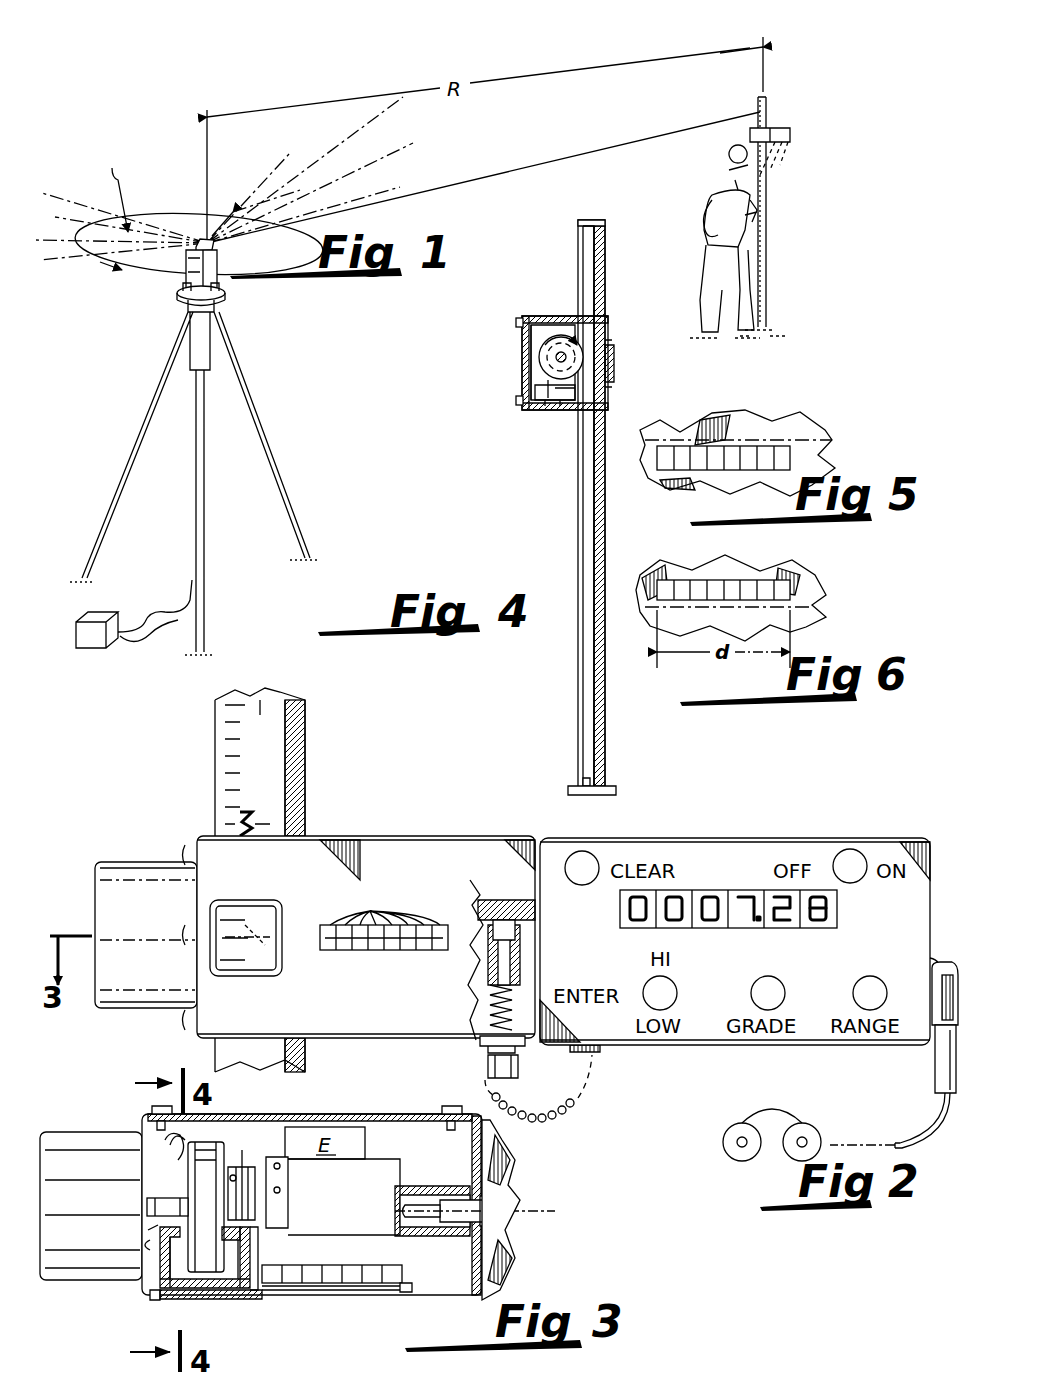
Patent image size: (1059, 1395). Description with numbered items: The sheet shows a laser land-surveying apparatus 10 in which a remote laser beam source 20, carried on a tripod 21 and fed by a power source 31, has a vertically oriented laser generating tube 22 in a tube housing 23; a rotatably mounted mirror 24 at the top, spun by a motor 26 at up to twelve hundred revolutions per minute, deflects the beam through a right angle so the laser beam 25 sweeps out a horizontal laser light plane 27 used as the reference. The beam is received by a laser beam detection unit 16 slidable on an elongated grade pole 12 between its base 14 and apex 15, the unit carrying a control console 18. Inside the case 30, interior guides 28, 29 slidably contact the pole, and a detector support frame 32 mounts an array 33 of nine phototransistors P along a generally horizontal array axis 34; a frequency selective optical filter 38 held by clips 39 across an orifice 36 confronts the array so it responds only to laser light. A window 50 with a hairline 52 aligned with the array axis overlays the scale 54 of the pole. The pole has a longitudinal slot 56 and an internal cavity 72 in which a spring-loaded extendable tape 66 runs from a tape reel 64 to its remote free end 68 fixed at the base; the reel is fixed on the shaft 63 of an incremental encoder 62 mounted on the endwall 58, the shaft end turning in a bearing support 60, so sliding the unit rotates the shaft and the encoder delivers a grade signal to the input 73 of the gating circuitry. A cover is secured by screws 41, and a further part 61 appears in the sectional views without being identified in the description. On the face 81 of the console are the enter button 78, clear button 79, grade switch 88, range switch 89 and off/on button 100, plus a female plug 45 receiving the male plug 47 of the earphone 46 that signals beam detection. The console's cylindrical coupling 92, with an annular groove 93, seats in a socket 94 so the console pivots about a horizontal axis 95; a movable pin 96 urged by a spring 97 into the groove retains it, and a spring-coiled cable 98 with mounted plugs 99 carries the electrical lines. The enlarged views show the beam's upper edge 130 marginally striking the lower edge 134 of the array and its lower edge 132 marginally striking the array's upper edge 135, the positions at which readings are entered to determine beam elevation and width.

In FIG. 1, the laser land-surveying apparatus 10 is at (818, 130).
In FIG. 1, the grade pole 12 is at (767, 226).
In FIG. 4, the grade pole 12 is at (552, 515).
In FIG. 2, the grade pole 12 is at (305, 718).
In FIG. 3, the grade pole 12 is at (250, 1255).
In FIG. 1, the base 14 is at (767, 325).
In FIG. 4, the base 14 is at (568, 790).
In FIG. 1, the apex 15 is at (766, 98).
In FIG. 4, the apex 15 is at (592, 220).
In FIG. 1, the laser beam detection unit 16 is at (778, 128).
In FIG. 2, the laser beam detection unit 16 is at (440, 836).
In FIG. 3, the laser beam detection unit 16 is at (327, 1310).
In FIG. 1, the control console 18 is at (790, 142).
In FIG. 2, the control console 18 is at (737, 813).
In FIG. 1, the laser beam source 20 is at (160, 296).
In FIG. 1, the tripod 21 is at (160, 370).
In FIG. 1, the laser generating tube 22 is at (213, 355).
In FIG. 1, the tube housing 23 is at (186, 268).
In FIG. 1, the rotatably mounted mirror 24 is at (207, 243).
In FIG. 1, the laser beam 25 is at (462, 190).
In FIG. 5, the laser beam 25 is at (805, 432).
In FIG. 6, the laser beam 25 is at (694, 600).
In FIG. 1, the motor 26 is at (216, 251).
In FIG. 1, the laser light plane 27 is at (111, 207).
In FIG. 5, the laser light plane 27 is at (833, 440).
In FIG. 6, the laser light plane 27 is at (813, 607).
In FIG. 3, the interior guide 28 is at (150, 1295).
In FIG. 3, the interior guide 29 is at (255, 1270).
In FIG. 4, the case 30 is at (550, 316).
In FIG. 2, the case 30 is at (378, 836).
In FIG. 3, the case 30 is at (452, 1295).
In FIG. 1, the power source 31 is at (84, 612).
In FIG. 4, the detector support frame 32 is at (535, 390).
In FIG. 5, the detector support frame 32 is at (768, 425).
In FIG. 6, the detector support frame 32 is at (810, 572).
In FIG. 3, the detector support frame 32 is at (280, 1160).
In FIG. 5, the array of phototransistors 33 is at (788, 458).
In FIG. 6, the array of phototransistors 33 is at (788, 590).
In FIG. 2, the array of phototransistors 33 is at (323, 922).
In FIG. 3, the array of phototransistors 33 is at (404, 1272).
In FIG. 2, the array axis 34 is at (402, 953).
In FIG. 2, the orifice 36 is at (368, 953).
In FIG. 2, the frequency selective optical filter 38 is at (340, 953).
In FIG. 3, the frequency selective optical filter 38 is at (375, 1292).
In FIG. 3, the clips 39 is at (410, 1294).
In FIG. 4, the screws 41 is at (516, 322).
In FIG. 3, the screws 41 is at (152, 1109).
In FIG. 2, the female plug 45 is at (930, 960).
In FIG. 2, the earphone or speaker 46 is at (808, 1124).
In FIG. 2, the male plug 47 is at (938, 1066).
In FIG. 4, the window 50 is at (614, 350).
In FIG. 2, the window 50 is at (230, 910).
In FIG. 3, the window 50 is at (190, 1299).
In FIG. 2, the hairline 52 is at (252, 940).
In FIG. 4, the scale 54 is at (614, 372).
In FIG. 2, the scale 54 is at (215, 792).
In FIG. 4, the longitudinal slot 56 is at (580, 277).
In FIG. 3, the longitudinal slot 56 is at (242, 1236).
In FIG. 3, the endwall 58 is at (148, 1236).
In FIG. 4, the bearing support 60 is at (548, 398).
In FIG. 3, the bearing support 60 is at (243, 1167).
In FIG. 4, the housing wall 61 is at (522, 348).
In FIG. 3, the housing wall 61 is at (376, 1116).
In FIG. 2, the incremental encoder 62 is at (95, 908).
In FIG. 3, the incremental encoder 62 is at (78, 1140).
In FIG. 4, the shaft 63 is at (556, 358).
In FIG. 3, the shaft 63 is at (165, 1198).
In FIG. 4, the tape reel 64 is at (575, 345).
In FIG. 3, the tape reel 64 is at (215, 1142).
In FIG. 4, the extendable tape 66 is at (583, 472).
In FIG. 4, the remote free end 68 is at (584, 780).
In FIG. 3, the internal cavity 72 is at (240, 1270).
In FIG. 3, the input 73 is at (165, 1152).
In FIG. 2, the enter button 78 is at (676, 988).
In FIG. 2, the clear button 79 is at (583, 852).
In FIG. 2, the face 81 is at (758, 848).
In FIG. 3, the face 81 is at (500, 1272).
In FIG. 2, the grade switch 88 is at (776, 980).
In FIG. 2, the range switch 89 is at (853, 995).
In FIG. 2, the cylindrical coupling 92 is at (488, 925).
In FIG. 3, the cylindrical coupling 92 is at (490, 1218).
In FIG. 2, the annular groove 93 is at (500, 890).
In FIG. 3, the annular groove 93 is at (442, 1222).
In FIG. 2, the socket 94 is at (503, 900).
In FIG. 3, the socket 94 is at (428, 1186).
In FIG. 2, the horizontal axis 95 is at (565, 943).
In FIG. 3, the horizontal axis 95 is at (548, 1211).
In FIG. 2, the movable pin 96 is at (518, 1068).
In FIG. 2, the spring 97 is at (490, 1005).
In FIG. 2, the cable 98 is at (536, 1113).
In FIG. 2, the mounted plugs 99 is at (480, 1046).
In FIG. 2, the off/on button 100 is at (853, 852).
In FIG. 5, the upper edge 130 is at (668, 432).
In FIG. 6, the upper edge 130 is at (648, 592).
In FIG. 5, the lower edge 132 is at (650, 475).
In FIG. 6, the lower edge 132 is at (795, 615).
In FIG. 5, the lower edge 134 is at (715, 470).
In FIG. 6, the lower edge 134 is at (680, 615).
In FIG. 5, the upper edge 135 is at (707, 445).
In FIG. 6, the upper edge 135 is at (753, 598).
In FIG. 2, the phototransistors P is at (385, 907).